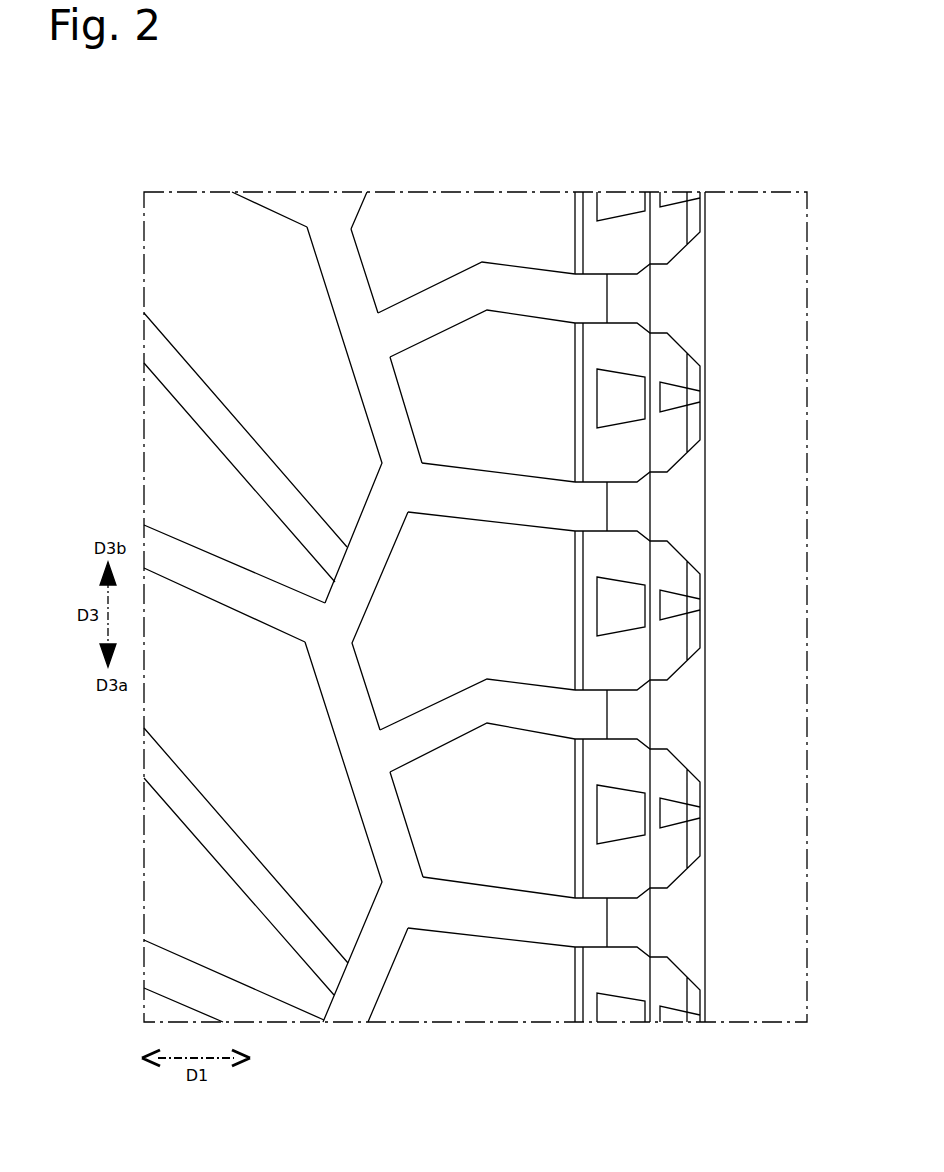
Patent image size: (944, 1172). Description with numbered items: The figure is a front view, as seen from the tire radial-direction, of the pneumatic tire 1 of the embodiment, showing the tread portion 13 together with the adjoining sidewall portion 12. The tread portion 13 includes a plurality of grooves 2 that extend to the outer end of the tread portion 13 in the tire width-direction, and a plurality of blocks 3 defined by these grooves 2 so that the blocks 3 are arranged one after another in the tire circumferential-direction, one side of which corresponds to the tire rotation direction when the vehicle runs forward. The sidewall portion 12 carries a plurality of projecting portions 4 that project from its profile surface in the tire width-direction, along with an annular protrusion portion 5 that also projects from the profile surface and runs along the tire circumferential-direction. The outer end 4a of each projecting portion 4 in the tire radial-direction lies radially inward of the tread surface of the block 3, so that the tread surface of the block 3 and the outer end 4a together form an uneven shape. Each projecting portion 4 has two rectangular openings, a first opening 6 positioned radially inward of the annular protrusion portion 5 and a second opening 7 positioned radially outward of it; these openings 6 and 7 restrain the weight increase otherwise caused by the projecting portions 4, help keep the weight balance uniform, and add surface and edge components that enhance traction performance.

The pneumatic tire 1 is at (775, 225).
The groove 2 is at (542, 303).
The block 3 is at (425, 410).
The projecting portion 4 is at (681, 344).
The outer end of the projecting portion 4a is at (582, 343).
The annular protrusion portion 5 is at (652, 912).
The first opening 6 is at (700, 397).
The second opening 7 is at (600, 398).
The sidewall portion 12 is at (750, 940).
The tread portion 13 is at (330, 212).